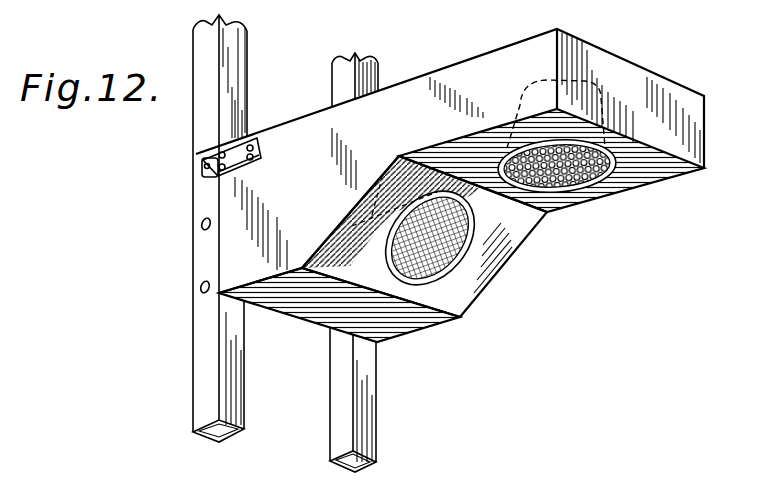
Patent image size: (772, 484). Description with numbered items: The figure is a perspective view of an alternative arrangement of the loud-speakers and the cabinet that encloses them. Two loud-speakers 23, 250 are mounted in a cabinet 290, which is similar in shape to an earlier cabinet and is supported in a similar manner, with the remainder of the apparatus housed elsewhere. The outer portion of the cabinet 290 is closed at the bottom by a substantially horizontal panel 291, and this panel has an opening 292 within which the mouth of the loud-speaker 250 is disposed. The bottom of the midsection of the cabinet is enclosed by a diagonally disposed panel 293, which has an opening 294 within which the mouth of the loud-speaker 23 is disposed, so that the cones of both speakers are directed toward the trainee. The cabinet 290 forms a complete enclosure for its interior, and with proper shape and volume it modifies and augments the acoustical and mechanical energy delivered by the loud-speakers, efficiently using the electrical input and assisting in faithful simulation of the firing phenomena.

The loud-speaker 23 is at (378, 236).
The loud-speaker 250 is at (597, 97).
The cabinet 290 is at (532, 43).
The horizontal panel 291 is at (662, 162).
The opening 292 is at (590, 187).
The diagonally disposed panel 293 is at (502, 253).
The opening 294 is at (467, 256).